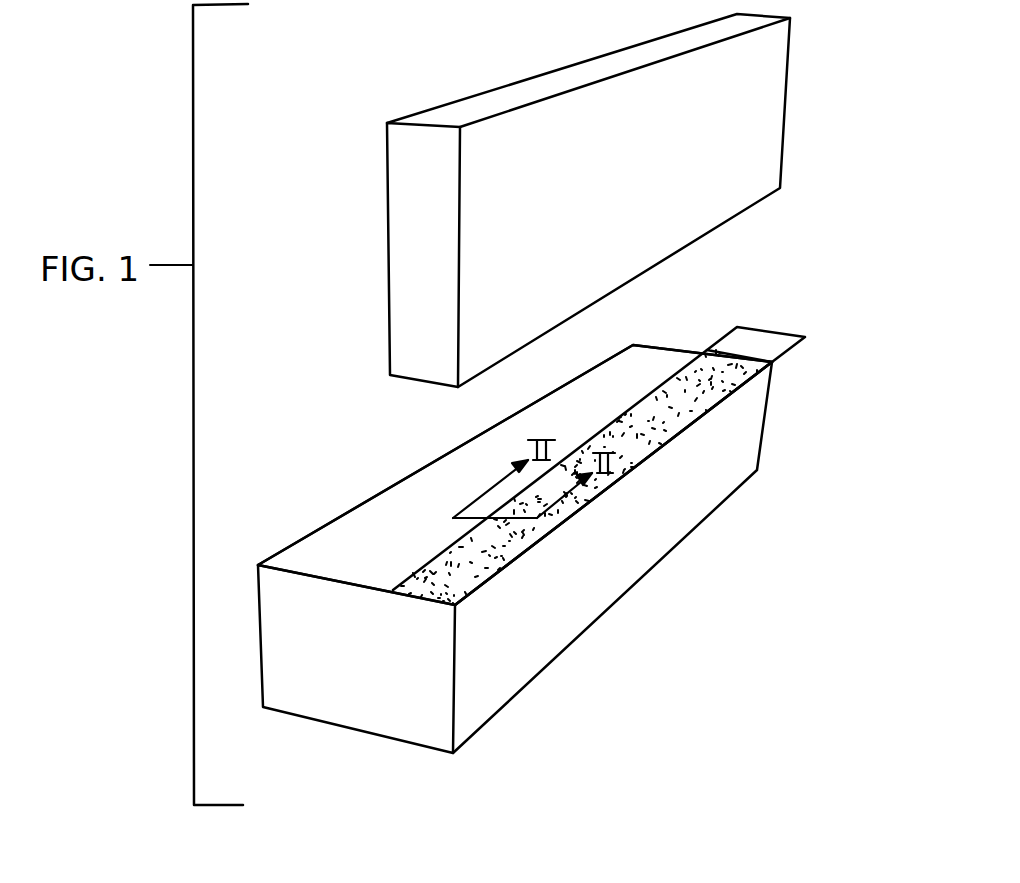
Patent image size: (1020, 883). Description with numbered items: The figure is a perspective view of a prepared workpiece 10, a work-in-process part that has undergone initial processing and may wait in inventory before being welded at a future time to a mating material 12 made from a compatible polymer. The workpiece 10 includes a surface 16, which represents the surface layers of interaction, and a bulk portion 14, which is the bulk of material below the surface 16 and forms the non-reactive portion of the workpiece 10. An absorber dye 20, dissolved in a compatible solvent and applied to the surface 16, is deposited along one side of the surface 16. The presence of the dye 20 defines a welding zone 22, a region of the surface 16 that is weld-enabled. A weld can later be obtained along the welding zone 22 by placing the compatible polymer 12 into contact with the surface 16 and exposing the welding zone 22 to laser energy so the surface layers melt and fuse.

The prepared workpiece 10 is at (645, 590).
The mating material 12 is at (798, 63).
The bulk portion 14 is at (748, 435).
The surface 16 is at (375, 525).
The absorber dye 20 is at (745, 370).
The welding zone 22 is at (772, 333).